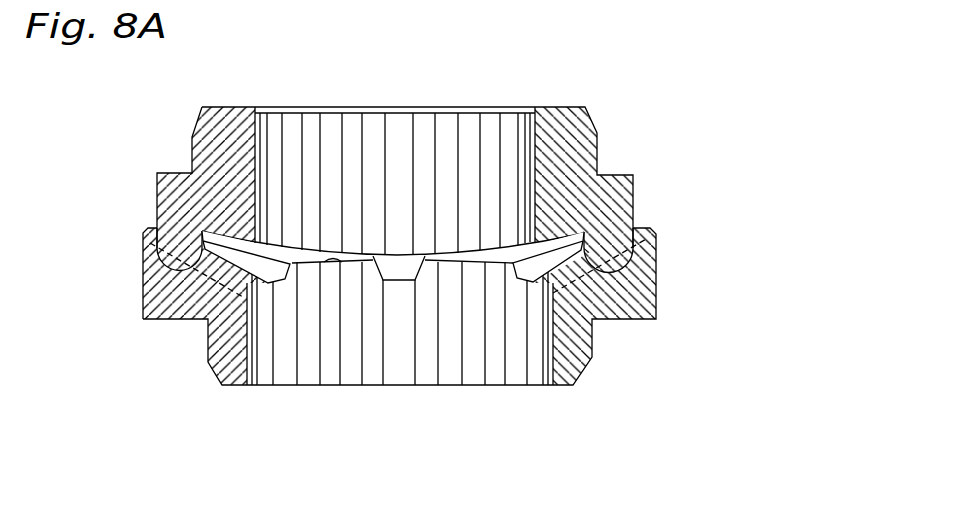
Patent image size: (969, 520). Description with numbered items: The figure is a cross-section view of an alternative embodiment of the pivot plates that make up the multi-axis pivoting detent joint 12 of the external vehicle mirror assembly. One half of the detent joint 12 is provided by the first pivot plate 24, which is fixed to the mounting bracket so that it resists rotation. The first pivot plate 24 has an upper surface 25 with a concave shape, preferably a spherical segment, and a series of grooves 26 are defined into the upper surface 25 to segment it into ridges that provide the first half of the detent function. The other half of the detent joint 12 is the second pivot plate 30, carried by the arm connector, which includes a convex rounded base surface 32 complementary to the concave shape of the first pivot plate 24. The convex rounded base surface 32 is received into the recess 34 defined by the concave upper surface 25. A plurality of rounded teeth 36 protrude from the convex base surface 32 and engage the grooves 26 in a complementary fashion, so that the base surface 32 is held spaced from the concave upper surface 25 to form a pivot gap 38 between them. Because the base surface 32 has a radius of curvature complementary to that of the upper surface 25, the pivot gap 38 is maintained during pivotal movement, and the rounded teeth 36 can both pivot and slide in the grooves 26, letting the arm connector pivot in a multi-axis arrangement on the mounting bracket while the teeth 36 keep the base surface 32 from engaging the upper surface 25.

The multi-axis pivoting detent joint 12 is at (762, 207).
The first pivot plate 24 is at (579, 348).
The upper surface 25 is at (340, 265).
The grooves 26 is at (168, 263).
The second pivot plate 30 is at (573, 130).
The convex rounded base surface 32 is at (390, 310).
The recess 34 is at (233, 257).
The rounded teeth 36 is at (608, 252).
The pivot gap 38 is at (447, 272).